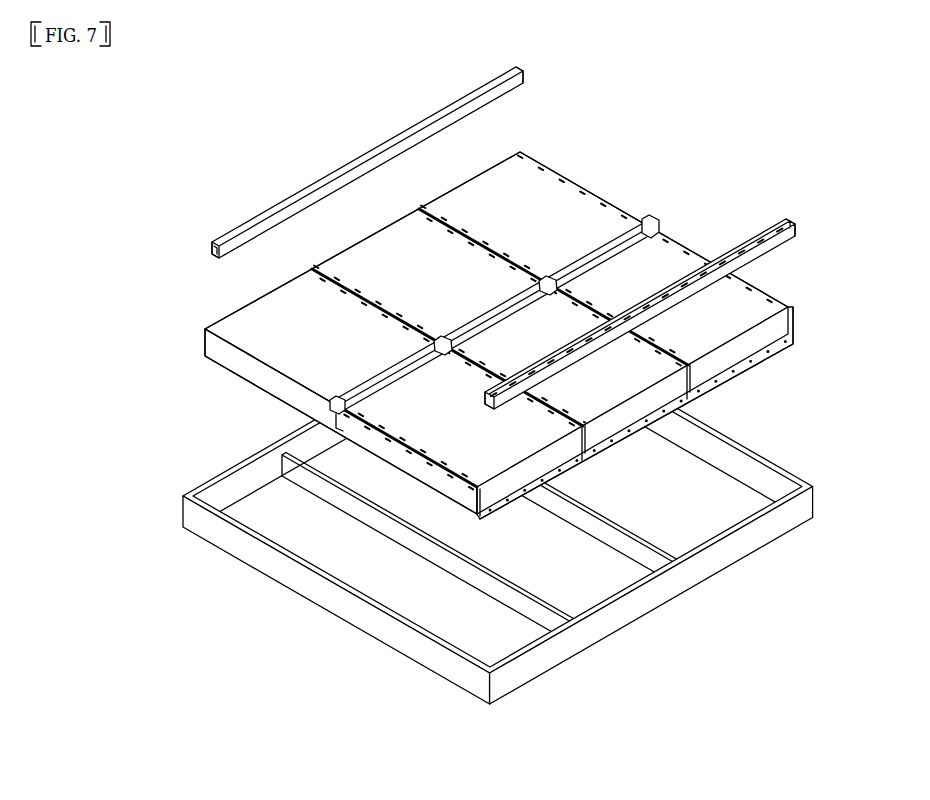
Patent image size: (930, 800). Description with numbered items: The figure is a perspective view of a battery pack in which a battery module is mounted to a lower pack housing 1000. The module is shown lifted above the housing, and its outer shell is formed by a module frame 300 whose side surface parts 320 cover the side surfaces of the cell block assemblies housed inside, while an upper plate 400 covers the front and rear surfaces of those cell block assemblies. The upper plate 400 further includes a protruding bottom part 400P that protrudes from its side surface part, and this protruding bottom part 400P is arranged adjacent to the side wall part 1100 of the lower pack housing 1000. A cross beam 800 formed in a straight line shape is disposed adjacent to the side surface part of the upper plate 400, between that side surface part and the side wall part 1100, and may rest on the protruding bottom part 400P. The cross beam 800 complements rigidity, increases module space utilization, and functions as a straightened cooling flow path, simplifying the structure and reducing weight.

The lower pack housing 1000 is at (498, 507).
The side wall part 1100 is at (717, 559).
The upper plate 400 is at (468, 394).
The protruding bottom part 400P is at (522, 505).
The side surface part 320 is at (250, 373).
The module frame 300 is at (239, 355).
The cross beam 800 is at (377, 148).